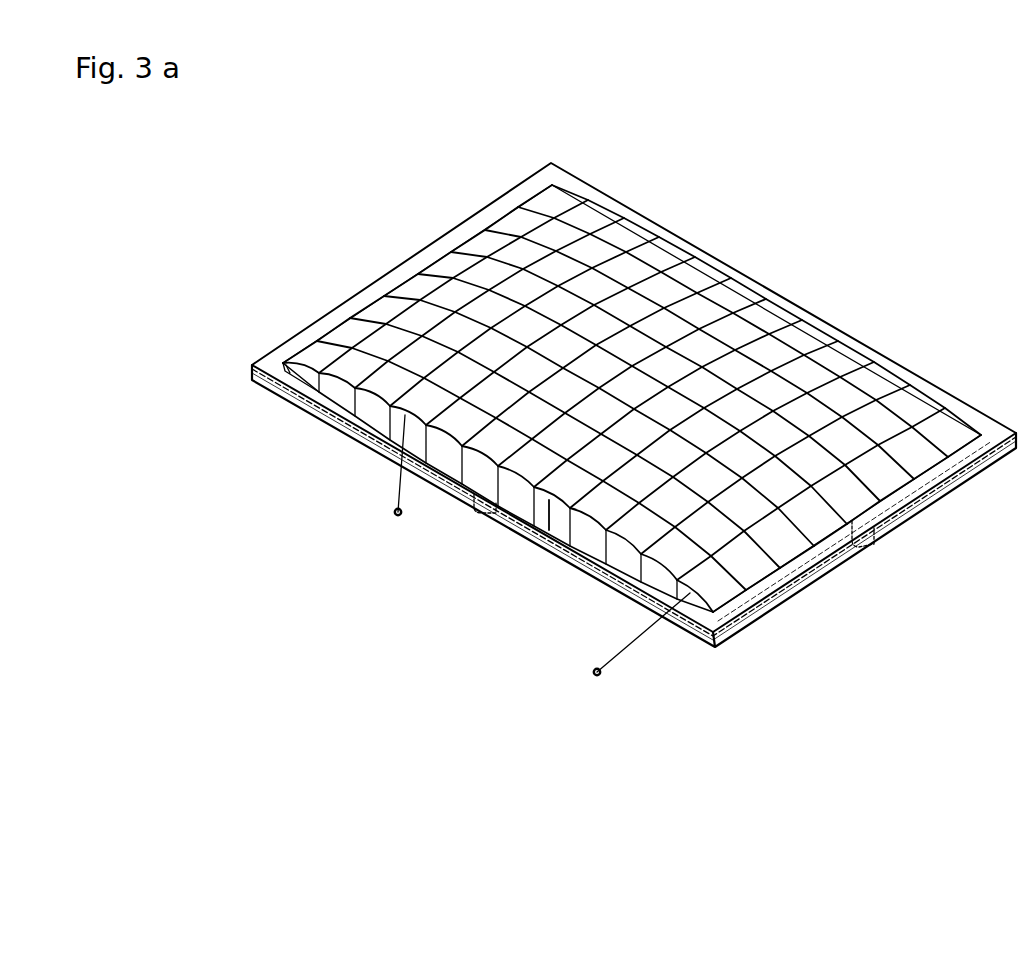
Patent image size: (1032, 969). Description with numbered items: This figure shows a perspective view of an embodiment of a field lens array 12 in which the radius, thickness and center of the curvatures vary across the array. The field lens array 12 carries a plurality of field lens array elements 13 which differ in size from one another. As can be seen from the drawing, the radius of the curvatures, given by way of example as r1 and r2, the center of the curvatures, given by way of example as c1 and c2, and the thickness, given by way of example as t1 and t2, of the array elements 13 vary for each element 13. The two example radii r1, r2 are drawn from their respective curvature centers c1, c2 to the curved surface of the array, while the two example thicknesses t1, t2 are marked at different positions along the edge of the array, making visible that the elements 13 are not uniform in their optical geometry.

The field lens array 12 is at (316, 252).
The field lens array elements 13 is at (805, 332).
The thickness t1 is at (291, 384).
The thickness t2 is at (542, 526).
The radius of the curvature r1 is at (387, 492).
The radius of the curvature r2 is at (658, 649).
The center of the curvature c1 is at (394, 539).
The center of the curvature c2 is at (601, 700).